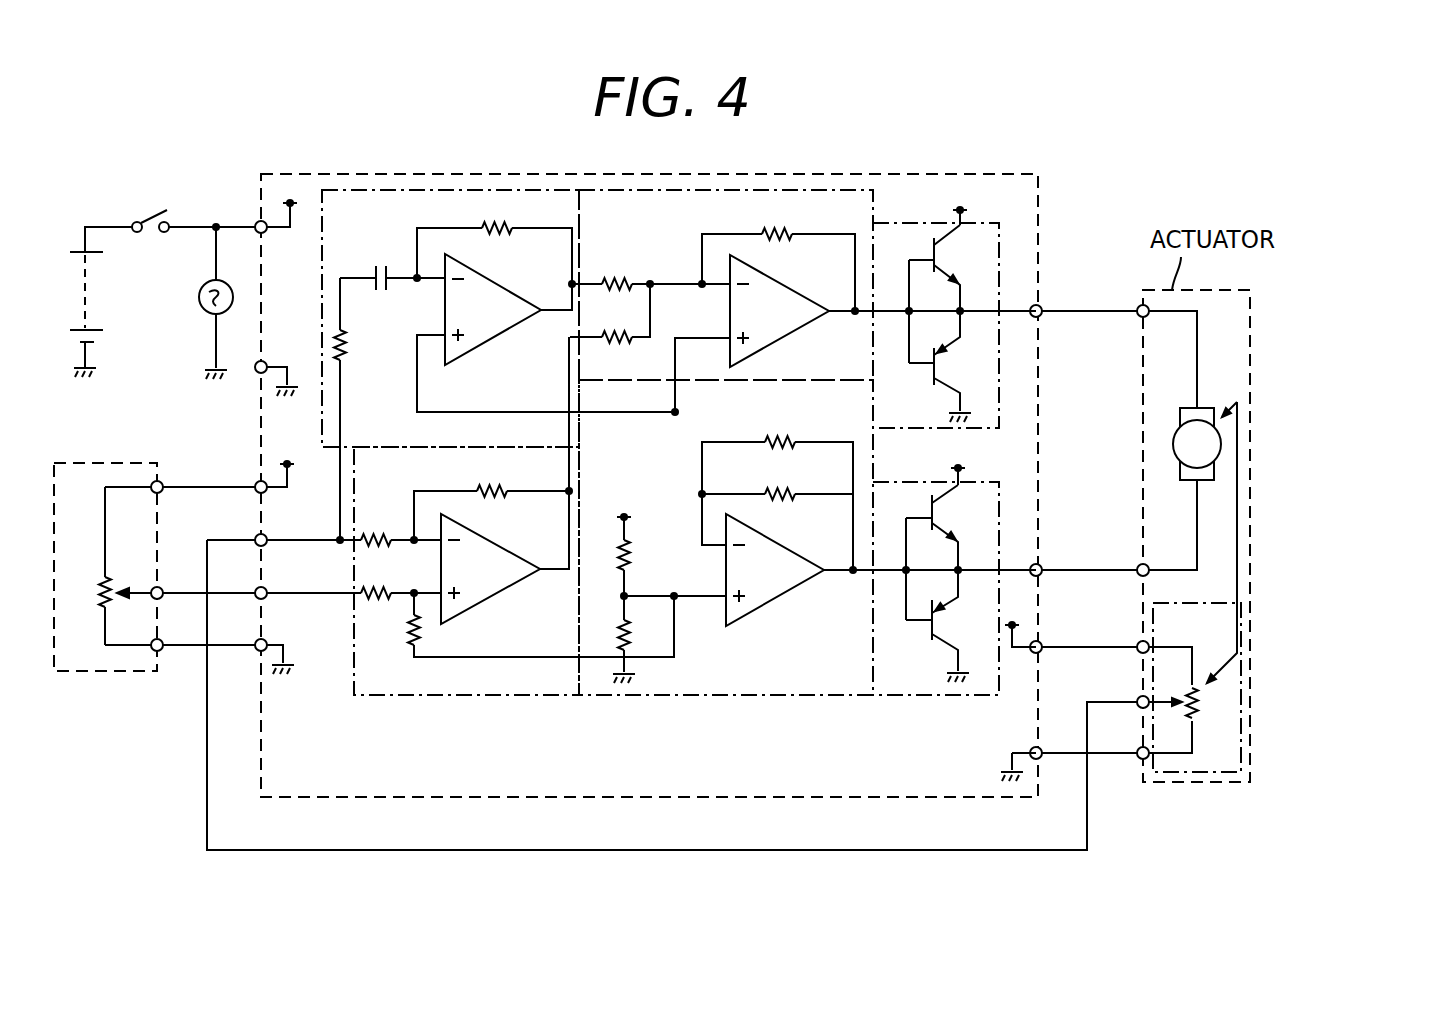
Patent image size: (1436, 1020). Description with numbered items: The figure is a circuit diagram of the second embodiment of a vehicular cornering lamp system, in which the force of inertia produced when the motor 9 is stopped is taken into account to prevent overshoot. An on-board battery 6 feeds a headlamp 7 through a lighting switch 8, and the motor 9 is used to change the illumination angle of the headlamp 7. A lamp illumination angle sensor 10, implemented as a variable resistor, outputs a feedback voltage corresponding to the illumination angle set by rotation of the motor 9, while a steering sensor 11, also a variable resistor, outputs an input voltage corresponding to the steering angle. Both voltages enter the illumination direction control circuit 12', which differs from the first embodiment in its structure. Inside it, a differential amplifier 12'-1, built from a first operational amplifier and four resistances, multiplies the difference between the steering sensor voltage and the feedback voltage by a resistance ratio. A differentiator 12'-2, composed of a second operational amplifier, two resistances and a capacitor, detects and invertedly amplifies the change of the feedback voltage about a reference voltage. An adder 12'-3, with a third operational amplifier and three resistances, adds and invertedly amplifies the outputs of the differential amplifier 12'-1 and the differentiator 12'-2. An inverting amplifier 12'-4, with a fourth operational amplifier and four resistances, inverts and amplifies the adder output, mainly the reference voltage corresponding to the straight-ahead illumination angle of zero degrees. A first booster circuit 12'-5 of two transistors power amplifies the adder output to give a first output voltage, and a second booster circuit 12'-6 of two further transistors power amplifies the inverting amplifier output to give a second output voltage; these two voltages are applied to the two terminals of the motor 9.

The on-board battery 6 is at (94, 289).
The headlamp 7 is at (228, 311).
The lighting switch 8 is at (146, 216).
The motor 9 is at (1172, 447).
The lamp illumination angle sensor 10 is at (1173, 773).
The steering sensor 11 is at (84, 673).
The illumination direction control circuit 12' is at (660, 472).
The differential amplifier 12'-1 is at (470, 537).
The differentiator 12'-2 is at (500, 343).
The adder 12'-3 is at (721, 279).
The inverting amplifier 12'-4 is at (724, 558).
The first booster circuit 12'-5 is at (990, 305).
The second booster circuit 12'-6 is at (936, 588).